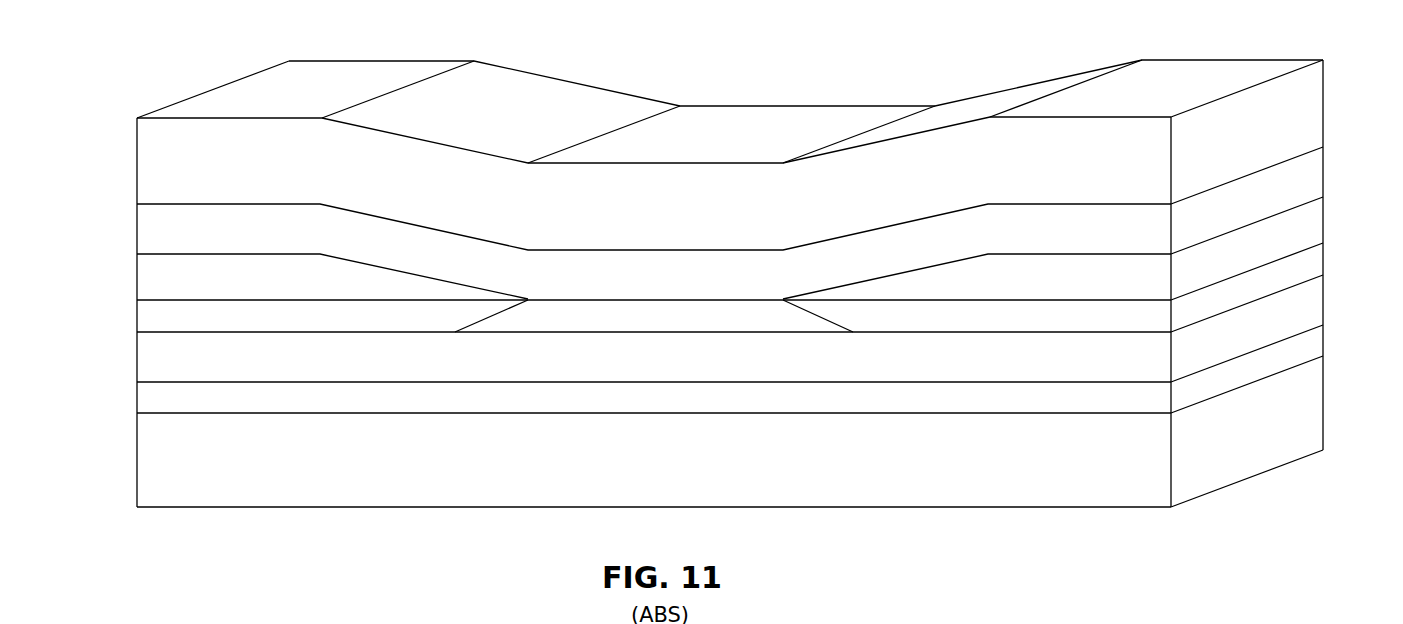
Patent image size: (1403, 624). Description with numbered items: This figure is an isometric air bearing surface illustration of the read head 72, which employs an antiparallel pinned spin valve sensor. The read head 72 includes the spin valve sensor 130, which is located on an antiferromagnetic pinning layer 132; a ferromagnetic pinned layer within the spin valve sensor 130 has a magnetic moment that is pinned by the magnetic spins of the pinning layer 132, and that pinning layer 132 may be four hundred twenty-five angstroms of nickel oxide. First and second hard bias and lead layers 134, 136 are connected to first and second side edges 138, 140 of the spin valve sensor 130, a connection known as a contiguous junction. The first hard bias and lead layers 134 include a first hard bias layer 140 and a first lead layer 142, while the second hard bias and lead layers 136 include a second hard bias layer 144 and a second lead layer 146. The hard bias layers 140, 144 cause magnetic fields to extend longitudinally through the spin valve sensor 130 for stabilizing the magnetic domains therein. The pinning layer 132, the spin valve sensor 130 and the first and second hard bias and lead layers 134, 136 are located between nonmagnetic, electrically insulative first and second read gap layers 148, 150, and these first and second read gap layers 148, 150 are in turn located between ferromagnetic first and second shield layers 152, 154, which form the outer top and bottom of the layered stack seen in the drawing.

The read head 72 is at (803, 80).
The spin valve sensor 130 is at (563, 288).
The antiferromagnetic pinning layer 132 is at (851, 362).
The first hard bias and lead layers 134 is at (132, 255).
The second hard bias and lead layers 136 is at (1333, 195).
The first side edge 138 is at (476, 318).
The first hard bias layer 140 is at (180, 318).
The first lead layer 142 is at (180, 268).
The second hard bias layer 144 is at (1117, 318).
The second lead layer 146 is at (1117, 267).
The first read gap layer 148 is at (427, 402).
The second read gap layer 150 is at (388, 232).
The first shield layer 152 is at (310, 487).
The second shield layer 154 is at (583, 95).